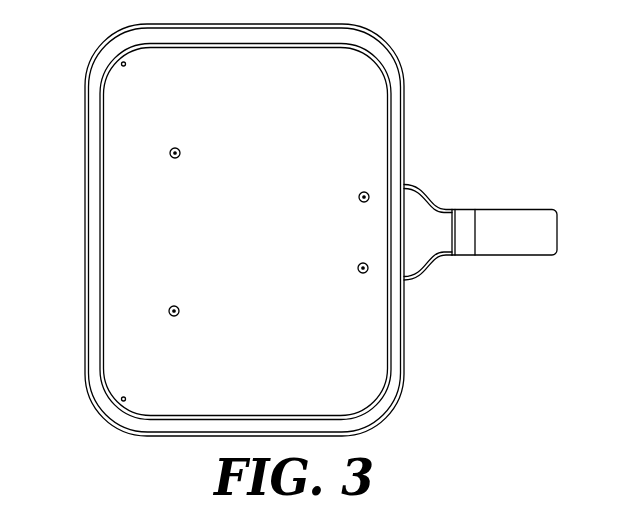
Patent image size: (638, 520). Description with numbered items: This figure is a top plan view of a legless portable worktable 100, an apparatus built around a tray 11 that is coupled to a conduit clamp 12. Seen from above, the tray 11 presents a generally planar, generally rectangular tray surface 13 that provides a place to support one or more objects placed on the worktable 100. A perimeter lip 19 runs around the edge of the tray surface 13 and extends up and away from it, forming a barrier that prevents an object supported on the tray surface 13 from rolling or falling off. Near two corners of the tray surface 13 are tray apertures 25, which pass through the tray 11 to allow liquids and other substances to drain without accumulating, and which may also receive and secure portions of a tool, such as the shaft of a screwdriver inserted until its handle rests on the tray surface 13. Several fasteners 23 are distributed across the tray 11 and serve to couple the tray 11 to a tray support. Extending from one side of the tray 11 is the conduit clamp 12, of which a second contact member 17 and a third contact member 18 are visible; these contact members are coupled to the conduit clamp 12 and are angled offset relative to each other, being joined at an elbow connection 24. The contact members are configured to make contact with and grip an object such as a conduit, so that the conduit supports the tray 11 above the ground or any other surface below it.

The legless portable worktable 100 is at (536, 51).
The tray 11 is at (125, 232).
The conduit clamp 12 is at (532, 292).
The tray surface 13 is at (333, 357).
The second contact member 17 is at (518, 222).
The third contact member 18 is at (420, 212).
The perimeter lip 19 is at (391, 72).
The fasteners 23 is at (181, 150).
The elbow connection 24 is at (462, 238).
The tray apertures 25 is at (121, 64).